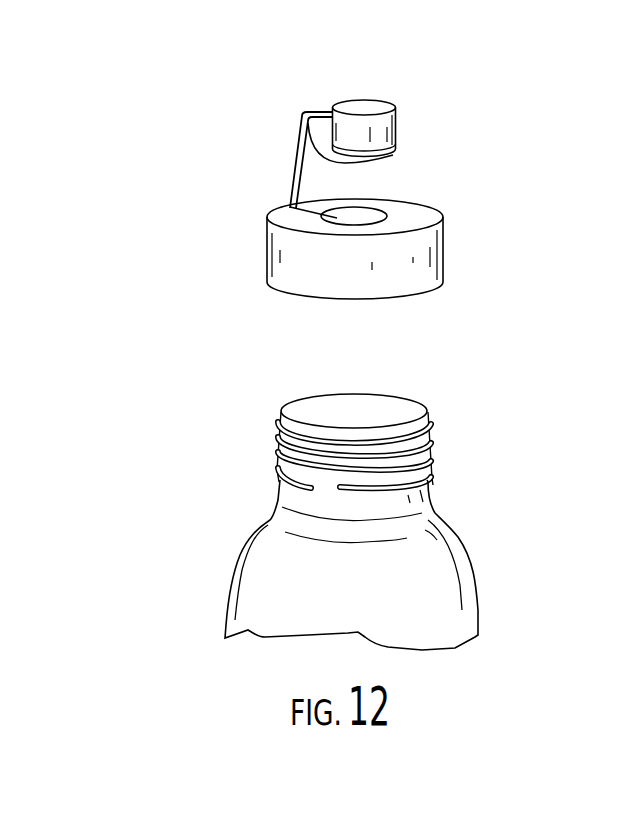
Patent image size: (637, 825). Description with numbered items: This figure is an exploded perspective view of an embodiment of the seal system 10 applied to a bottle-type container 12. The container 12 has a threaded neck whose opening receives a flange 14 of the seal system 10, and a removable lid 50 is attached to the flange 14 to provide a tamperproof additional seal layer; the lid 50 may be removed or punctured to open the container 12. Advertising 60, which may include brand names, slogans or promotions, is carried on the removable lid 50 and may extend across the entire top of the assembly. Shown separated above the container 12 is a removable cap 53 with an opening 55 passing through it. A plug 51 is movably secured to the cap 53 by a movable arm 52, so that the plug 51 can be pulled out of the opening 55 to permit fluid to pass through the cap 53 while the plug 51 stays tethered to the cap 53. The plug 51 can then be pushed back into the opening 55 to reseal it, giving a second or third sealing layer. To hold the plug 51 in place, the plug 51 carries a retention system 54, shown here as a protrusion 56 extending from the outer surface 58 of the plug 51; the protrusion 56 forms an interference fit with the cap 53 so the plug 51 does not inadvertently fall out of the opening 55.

The seal system 10 is at (158, 306).
The container 12 is at (450, 522).
The flange 14 is at (280, 411).
The removable lid 50 is at (430, 410).
The plug 51 is at (384, 99).
The movable arm 52 is at (313, 110).
The removable cap 53 is at (443, 248).
The retention system 54 is at (299, 104).
The opening 55 is at (290, 207).
The protrusion 56 is at (296, 158).
The outer surface 58 is at (397, 126).
The advertising 60 is at (402, 388).